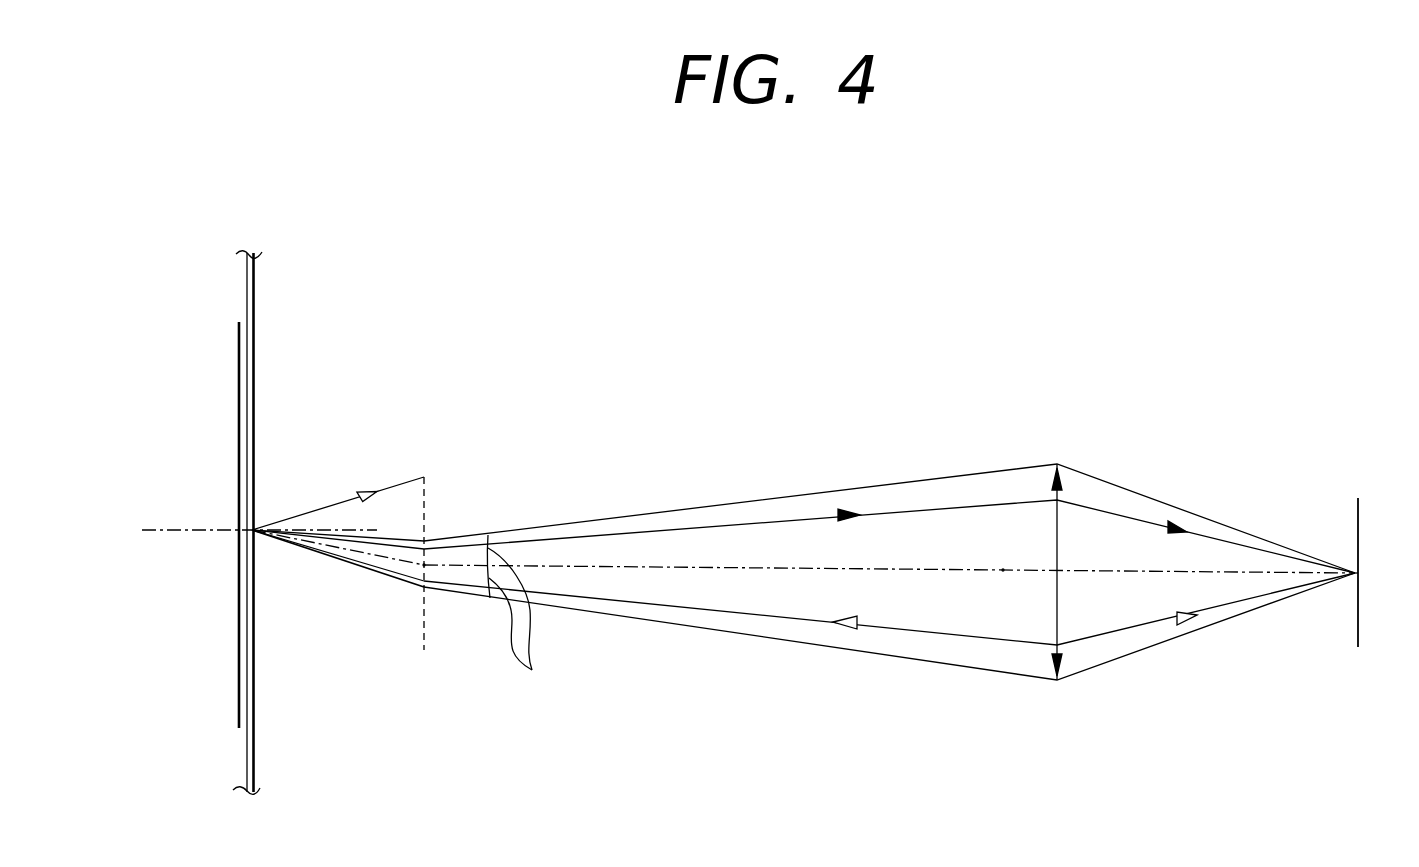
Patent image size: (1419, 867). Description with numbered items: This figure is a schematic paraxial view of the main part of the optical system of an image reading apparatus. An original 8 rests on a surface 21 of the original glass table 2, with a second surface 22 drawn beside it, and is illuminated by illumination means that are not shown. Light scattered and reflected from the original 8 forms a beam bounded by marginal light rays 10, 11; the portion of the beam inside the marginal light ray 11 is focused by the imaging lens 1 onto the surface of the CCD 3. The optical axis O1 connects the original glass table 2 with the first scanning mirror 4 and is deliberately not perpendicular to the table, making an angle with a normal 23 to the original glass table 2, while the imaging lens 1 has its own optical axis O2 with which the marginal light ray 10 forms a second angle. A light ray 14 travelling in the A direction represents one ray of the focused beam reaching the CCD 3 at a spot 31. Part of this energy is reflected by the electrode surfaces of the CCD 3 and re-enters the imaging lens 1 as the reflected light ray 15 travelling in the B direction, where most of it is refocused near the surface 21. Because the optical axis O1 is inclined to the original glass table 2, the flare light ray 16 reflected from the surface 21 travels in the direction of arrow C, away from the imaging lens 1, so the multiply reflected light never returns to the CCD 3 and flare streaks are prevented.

The imaging lens 1 is at (1057, 602).
The original glass table 2 is at (251, 494).
The CCD 3 is at (1360, 525).
The first scanning mirror 4 is at (427, 505).
The original 8 is at (238, 363).
The marginal light ray 10 is at (957, 475).
The marginal light ray 11 is at (403, 545).
The light ray 14 is at (817, 520).
The reflected light ray 15 is at (738, 613).
The light ray 16 is at (313, 508).
The surface 21 is at (245, 298).
The second plate 22 is at (257, 315).
The normal 23 is at (163, 528).
The focal spot on screen 31 is at (1353, 577).
The optical axis O1 is at (403, 547).
The optical axis O2 is at (1003, 570).
The A direction A is at (857, 517).
The B direction B is at (855, 620).
The arrow C is at (368, 490).